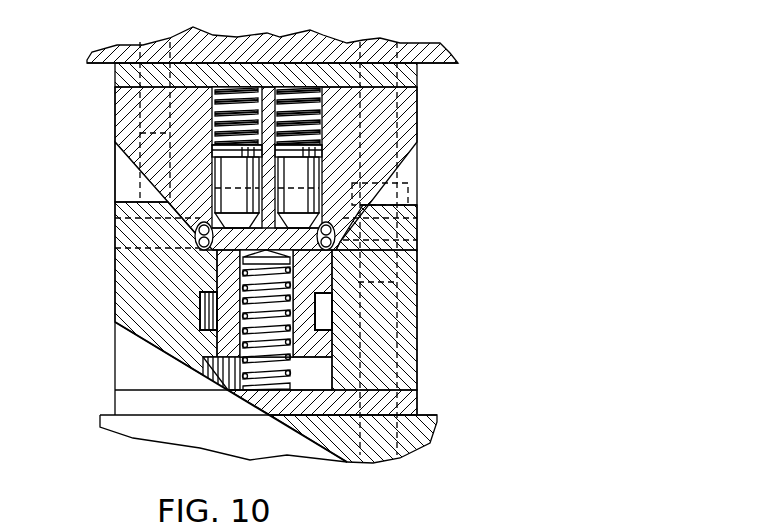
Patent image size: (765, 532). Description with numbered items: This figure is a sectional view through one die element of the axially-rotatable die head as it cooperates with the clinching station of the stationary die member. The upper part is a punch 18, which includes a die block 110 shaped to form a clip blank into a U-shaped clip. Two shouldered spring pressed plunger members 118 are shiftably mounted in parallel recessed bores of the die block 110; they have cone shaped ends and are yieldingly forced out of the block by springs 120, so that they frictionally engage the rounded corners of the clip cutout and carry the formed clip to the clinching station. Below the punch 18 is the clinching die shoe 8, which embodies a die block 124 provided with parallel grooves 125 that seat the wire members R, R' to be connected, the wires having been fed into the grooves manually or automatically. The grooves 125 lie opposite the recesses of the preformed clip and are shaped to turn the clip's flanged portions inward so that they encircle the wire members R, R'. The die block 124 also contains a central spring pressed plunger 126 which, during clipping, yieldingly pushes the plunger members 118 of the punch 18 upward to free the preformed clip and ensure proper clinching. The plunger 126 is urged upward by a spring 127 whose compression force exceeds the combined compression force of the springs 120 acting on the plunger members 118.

The clinching die shoe 8 is at (420, 323).
The punch 18 is at (113, 115).
The die block 110 is at (417, 128).
The spring pressed plunger members 118 is at (288, 172).
The springs 120 is at (290, 100).
The die block 124 is at (125, 288).
The grooves 125 is at (197, 250).
The central spring pressed plunger 126 is at (214, 346).
The spring 127 is at (287, 362).
The wire member R is at (438, 216).
The wire member R' is at (436, 193).